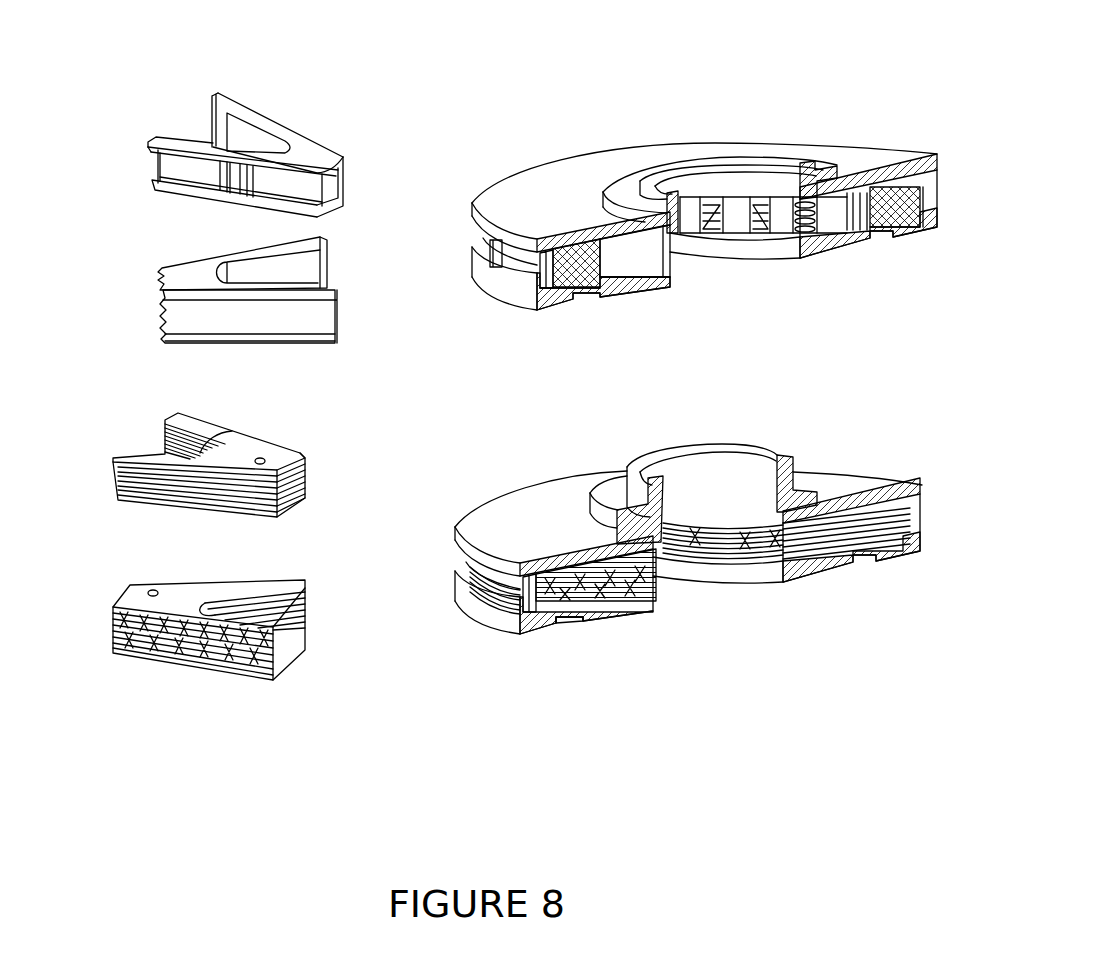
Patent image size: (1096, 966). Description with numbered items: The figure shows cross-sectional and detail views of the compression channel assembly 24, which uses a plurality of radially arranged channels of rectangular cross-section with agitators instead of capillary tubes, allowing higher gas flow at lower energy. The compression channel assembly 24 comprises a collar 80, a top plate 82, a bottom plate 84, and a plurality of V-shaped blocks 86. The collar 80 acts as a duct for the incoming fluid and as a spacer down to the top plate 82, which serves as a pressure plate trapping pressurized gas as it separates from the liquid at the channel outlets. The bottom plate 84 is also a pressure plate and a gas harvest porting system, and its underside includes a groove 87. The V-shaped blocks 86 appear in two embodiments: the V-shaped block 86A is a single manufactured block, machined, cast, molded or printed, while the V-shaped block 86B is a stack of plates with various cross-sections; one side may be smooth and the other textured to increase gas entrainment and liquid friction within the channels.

The compression channel assembly 24 is at (401, 63).
The collar 80 is at (718, 158).
The top plate 82 is at (473, 212).
The bottom plate 84 is at (640, 285).
The V-shaped blocks 86 is at (160, 328).
The V-shaped block formed of a single manufactured block 86A is at (158, 190).
The V-shaped block formed from a series of stacked plates 86B is at (120, 590).
The groove 87 is at (567, 628).